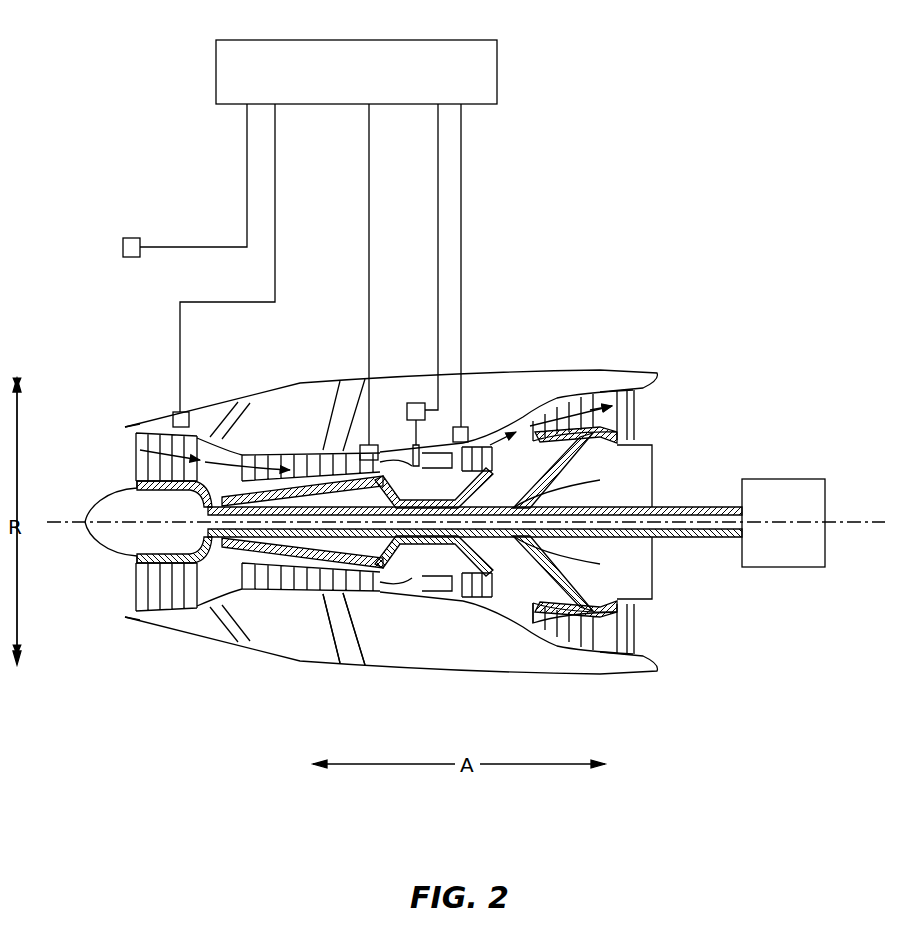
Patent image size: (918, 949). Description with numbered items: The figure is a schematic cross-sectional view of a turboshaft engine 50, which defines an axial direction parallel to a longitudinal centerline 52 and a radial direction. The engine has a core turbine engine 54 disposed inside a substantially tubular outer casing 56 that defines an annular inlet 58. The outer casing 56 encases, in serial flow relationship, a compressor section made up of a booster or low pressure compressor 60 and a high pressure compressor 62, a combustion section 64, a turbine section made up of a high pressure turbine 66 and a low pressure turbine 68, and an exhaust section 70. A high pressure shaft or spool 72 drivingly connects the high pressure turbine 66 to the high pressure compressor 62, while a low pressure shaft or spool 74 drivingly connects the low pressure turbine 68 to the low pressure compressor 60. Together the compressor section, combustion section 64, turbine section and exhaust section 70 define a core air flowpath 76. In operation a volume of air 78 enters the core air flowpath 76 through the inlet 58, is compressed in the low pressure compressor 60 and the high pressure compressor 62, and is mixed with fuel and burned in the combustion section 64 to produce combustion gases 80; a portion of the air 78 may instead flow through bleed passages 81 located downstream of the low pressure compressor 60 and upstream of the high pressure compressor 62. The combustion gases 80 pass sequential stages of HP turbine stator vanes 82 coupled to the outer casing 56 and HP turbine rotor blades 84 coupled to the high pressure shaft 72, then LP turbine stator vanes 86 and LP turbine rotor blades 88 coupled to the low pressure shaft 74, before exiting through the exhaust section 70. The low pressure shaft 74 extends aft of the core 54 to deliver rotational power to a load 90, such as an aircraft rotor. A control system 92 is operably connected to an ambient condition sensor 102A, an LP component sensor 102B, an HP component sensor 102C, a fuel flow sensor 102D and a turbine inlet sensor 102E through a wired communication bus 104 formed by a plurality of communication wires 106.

The turboshaft engine 50 is at (680, 265).
The longitudinal centerline 52 is at (673, 510).
The core turbine engine 54 is at (306, 662).
The outer casing 56 is at (434, 675).
The annular inlet 58 is at (123, 593).
The low pressure (LP) compressor 60 is at (207, 584).
The high pressure (HP) compressor 62 is at (263, 572).
The combustion section 64 is at (437, 582).
The high pressure (HP) turbine 66 is at (603, 573).
The low pressure (LP) turbine 68 is at (620, 655).
The exhaust section 70 is at (660, 642).
The high pressure (HP) shaft or spool 72 is at (470, 484).
The low pressure (LP) shaft or spool 74 is at (600, 480).
The core air flowpath 76 is at (232, 598).
The air 78 is at (117, 443).
The combustion gases 80 is at (578, 400).
The bleed passages 81 is at (333, 407).
The HP turbine stator vanes 82 is at (450, 597).
The HP turbine rotor blades 84 is at (473, 568).
The LP turbine stator vanes 86 is at (540, 632).
The LP turbine rotor blades 88 is at (543, 637).
The load 90 is at (805, 479).
The control system 92 is at (467, 47).
The ambient condition sensor 102A is at (125, 243).
The LP component sensor 102B is at (174, 413).
The HP component sensor 102C is at (360, 450).
The fuel flow sensor 102D is at (407, 407).
The turbine inlet sensor 102E is at (468, 437).
The communication bus 104 is at (508, 182).
The communication wires 106 is at (369, 172).